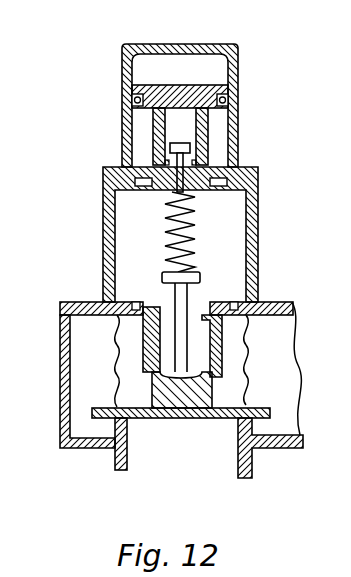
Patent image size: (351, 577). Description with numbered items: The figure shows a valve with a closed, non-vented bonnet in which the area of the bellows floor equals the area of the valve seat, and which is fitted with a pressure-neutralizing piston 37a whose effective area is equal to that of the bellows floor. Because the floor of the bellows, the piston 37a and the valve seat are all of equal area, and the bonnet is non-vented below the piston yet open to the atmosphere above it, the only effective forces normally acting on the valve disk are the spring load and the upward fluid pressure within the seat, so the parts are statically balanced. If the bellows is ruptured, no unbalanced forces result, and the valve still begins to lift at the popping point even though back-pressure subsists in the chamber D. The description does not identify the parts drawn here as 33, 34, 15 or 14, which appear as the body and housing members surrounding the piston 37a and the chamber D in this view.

The pressure-neutralizing piston 37a is at (185, 90).
The cylinder body 33 is at (217, 188).
The bellows 34 is at (112, 337).
The housing 15 is at (122, 399).
The base plate 14 is at (100, 420).
The chamber D is at (275, 348).